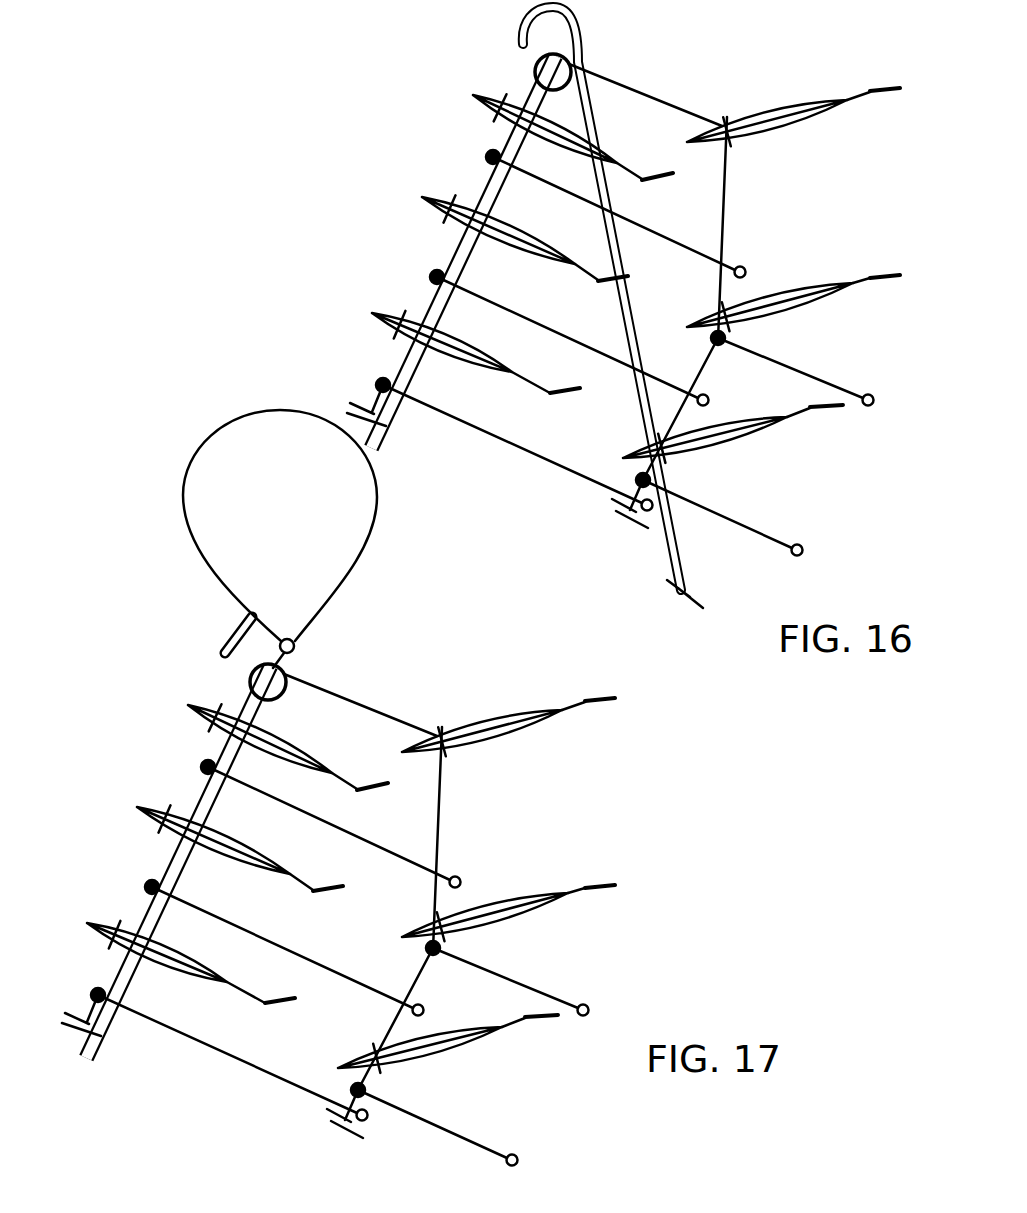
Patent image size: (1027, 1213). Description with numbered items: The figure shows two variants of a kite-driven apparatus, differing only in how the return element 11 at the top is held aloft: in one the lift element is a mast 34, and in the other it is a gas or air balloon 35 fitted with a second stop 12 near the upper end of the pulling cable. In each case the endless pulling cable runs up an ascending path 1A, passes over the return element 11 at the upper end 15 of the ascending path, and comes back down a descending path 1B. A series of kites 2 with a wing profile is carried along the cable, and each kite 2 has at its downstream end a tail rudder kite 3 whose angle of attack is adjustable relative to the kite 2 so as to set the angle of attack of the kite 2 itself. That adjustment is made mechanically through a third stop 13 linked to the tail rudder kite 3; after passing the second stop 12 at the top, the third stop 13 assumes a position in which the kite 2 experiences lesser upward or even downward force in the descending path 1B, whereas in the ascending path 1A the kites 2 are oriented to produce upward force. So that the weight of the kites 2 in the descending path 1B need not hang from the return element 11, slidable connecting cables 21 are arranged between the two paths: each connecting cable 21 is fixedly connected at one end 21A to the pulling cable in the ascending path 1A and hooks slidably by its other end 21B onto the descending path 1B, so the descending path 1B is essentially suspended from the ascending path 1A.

In FIG. 16, the ascending path 1A is at (453, 250).
In FIG. 17, the ascending path 1A is at (173, 855).
In FIG. 16, the descending path 1B is at (692, 372).
In FIG. 17, the descending path 1B is at (403, 854).
In FIG. 16, the kite 2 is at (787, 290).
In FIG. 17, the kite 2 is at (327, 894).
In FIG. 16, the tail rudder kite 3 is at (897, 277).
In FIG. 17, the tail rudder kite 3 is at (431, 885).
In FIG. 16, the return element 11 is at (561, 78).
In FIG. 17, the return element 11 is at (343, 704).
In FIG. 17, the second stop 12 is at (208, 613).
In FIG. 16, the third stop 13 is at (512, 108).
In FIG. 17, the third stop 13 is at (188, 690).
In FIG. 17, the upper end of the ascending path 15 is at (89, 620).
In FIG. 16, the connecting cable 21 is at (566, 192).
In FIG. 17, the connecting cable 21 is at (343, 966).
In FIG. 16, the one end of the connecting cable 21A is at (486, 157).
In FIG. 17, the one end of the connecting cable 21A is at (272, 930).
In FIG. 16, the other end of the connecting cable 21B is at (803, 550).
In FIG. 17, the other end of the connecting cable 21B is at (556, 1151).
In FIG. 16, the mast 34 is at (672, 563).
In FIG. 17, the balloon 35 is at (280, 513).